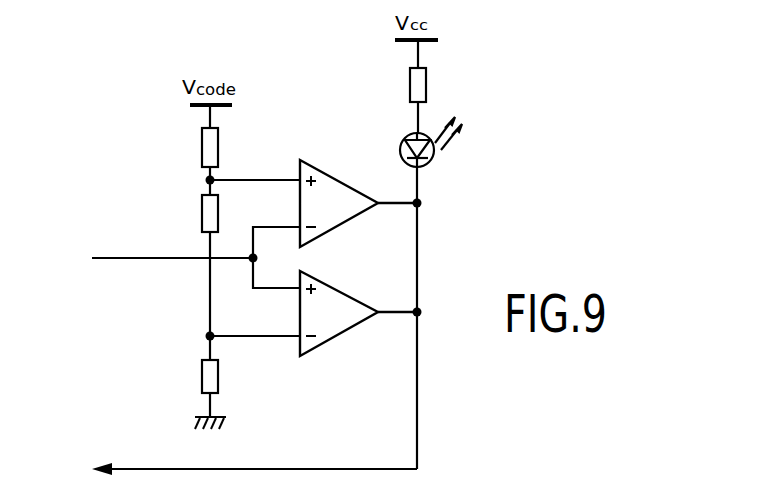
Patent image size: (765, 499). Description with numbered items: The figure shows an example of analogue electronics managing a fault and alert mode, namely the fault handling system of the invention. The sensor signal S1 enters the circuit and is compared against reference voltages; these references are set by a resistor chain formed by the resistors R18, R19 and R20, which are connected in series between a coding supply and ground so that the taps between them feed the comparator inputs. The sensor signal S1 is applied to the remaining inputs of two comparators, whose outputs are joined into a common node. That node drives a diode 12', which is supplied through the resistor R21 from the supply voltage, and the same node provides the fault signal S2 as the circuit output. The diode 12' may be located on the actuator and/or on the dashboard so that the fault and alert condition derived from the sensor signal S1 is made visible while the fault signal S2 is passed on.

The diode 12' is at (442, 150).
The resistor R18 is at (186, 147).
The resistor R19 is at (186, 213).
The resistor R20 is at (186, 377).
The resistor R21 is at (394, 85).
The sensor signal S1 is at (178, 257).
The fault signal S2 is at (237, 471).